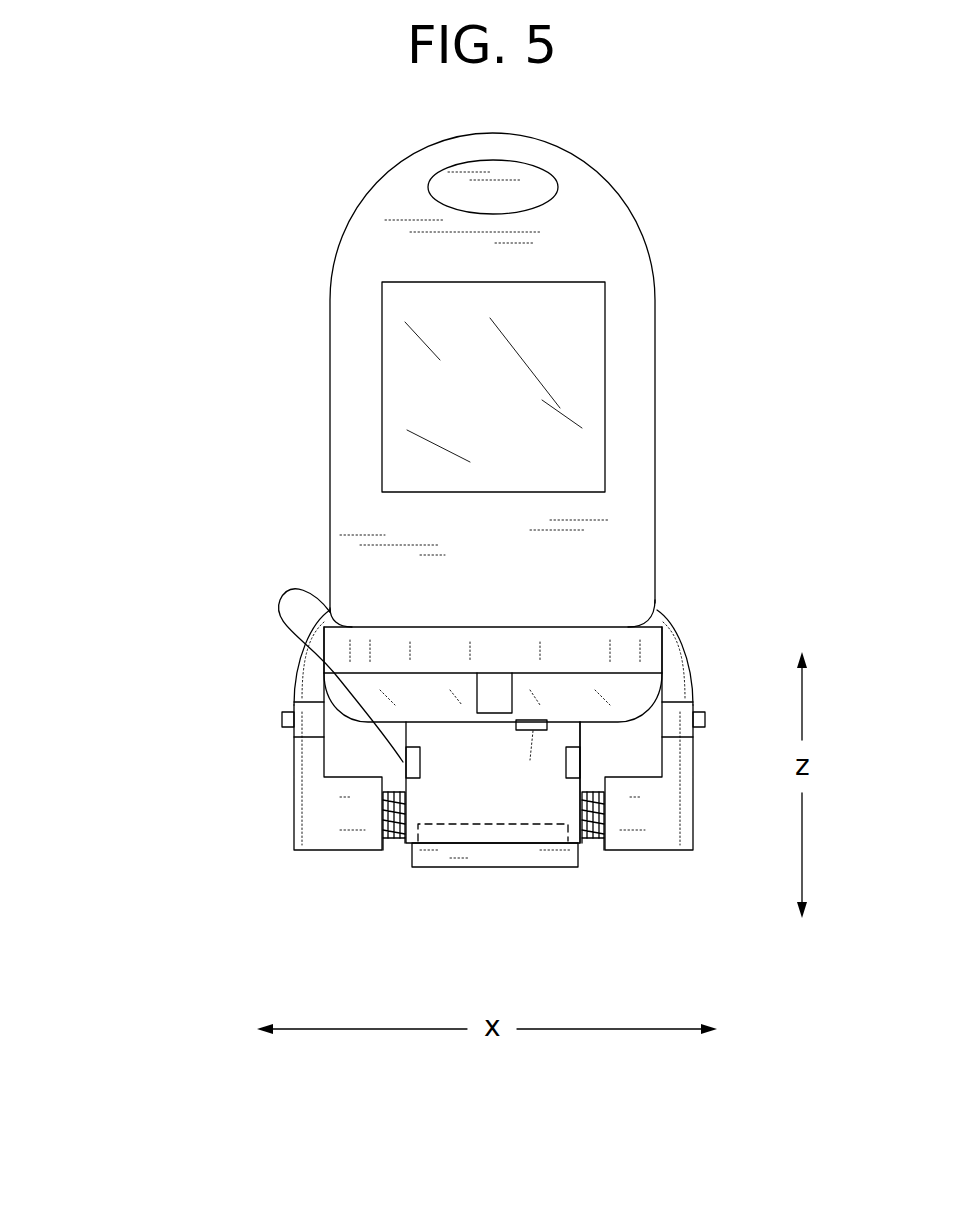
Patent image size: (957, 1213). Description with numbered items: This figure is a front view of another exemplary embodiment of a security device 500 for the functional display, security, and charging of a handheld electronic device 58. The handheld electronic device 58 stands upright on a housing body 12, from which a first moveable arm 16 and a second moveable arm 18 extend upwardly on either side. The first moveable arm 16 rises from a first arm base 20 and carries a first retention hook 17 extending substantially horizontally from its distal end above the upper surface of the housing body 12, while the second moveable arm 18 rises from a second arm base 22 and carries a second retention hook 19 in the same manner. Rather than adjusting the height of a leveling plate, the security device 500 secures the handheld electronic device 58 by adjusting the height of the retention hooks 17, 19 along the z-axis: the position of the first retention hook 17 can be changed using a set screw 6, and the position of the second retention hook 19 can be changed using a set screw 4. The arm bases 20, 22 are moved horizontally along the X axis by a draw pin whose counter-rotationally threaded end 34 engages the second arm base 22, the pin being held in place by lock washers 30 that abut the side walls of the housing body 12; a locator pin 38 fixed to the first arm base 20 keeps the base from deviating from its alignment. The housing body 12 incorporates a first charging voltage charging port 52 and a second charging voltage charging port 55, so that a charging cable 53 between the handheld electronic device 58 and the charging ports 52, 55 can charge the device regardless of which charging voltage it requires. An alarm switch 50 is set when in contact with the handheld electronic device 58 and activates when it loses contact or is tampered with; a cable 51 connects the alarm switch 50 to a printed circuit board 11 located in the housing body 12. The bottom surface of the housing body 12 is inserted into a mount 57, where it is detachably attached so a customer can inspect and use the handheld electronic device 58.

The security device 500 is at (160, 768).
The handheld electronic device 58 is at (347, 340).
The charging cable 53 is at (290, 590).
The first retention hook 17 is at (348, 623).
The second retention hook 19 is at (630, 626).
The housing body 12 is at (475, 735).
The first moveable arm 16 is at (302, 668).
The second moveable arm 18 is at (677, 663).
The set screw 6 is at (282, 713).
The set screw 4 is at (693, 702).
The first arm base 20 is at (294, 832).
The second arm base 22 is at (693, 823).
The lock washers 30 is at (402, 788).
The first charging voltage charging port 52 is at (421, 761).
The alarm switch 50 is at (531, 720).
The cable 51 is at (540, 772).
The printed circuit board 11 is at (480, 823).
The mount 57 is at (485, 867).
The locator pin 38 is at (390, 850).
The threaded end 34 is at (588, 846).
The second charging voltage charging port 55 is at (598, 806).